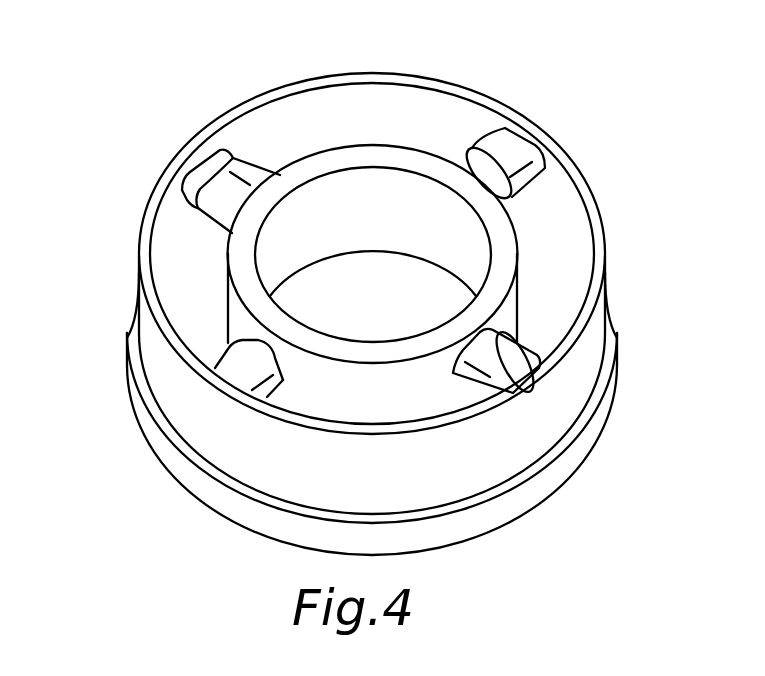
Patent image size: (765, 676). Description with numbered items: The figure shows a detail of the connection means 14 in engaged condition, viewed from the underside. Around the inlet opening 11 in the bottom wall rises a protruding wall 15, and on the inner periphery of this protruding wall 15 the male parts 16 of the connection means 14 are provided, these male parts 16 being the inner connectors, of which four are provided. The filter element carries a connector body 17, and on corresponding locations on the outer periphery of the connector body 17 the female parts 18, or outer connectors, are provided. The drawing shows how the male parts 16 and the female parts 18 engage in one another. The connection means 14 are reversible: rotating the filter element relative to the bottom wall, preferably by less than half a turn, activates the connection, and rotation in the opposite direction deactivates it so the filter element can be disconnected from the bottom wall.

The inlet opening 11 is at (310, 118).
The connection means 14 is at (169, 117).
The protruding wall 15 is at (158, 337).
The male part 16 is at (217, 158).
The connector body 17 is at (307, 173).
The female part 18 is at (226, 187).